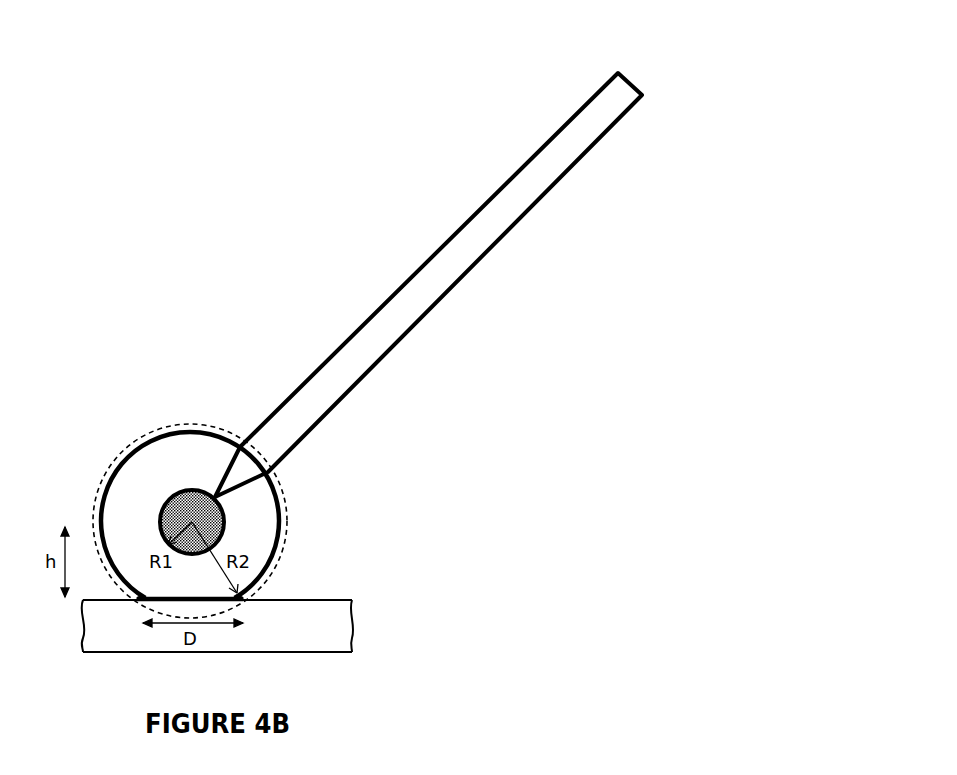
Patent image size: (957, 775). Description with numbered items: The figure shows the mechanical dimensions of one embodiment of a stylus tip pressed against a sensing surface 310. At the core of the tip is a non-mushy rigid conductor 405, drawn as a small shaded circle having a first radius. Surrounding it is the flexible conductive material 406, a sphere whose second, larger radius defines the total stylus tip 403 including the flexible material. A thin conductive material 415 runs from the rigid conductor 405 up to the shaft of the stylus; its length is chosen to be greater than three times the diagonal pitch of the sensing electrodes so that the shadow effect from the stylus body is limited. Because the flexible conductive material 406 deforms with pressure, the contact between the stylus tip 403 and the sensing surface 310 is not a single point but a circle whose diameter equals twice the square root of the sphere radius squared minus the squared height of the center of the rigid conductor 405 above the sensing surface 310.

The thin conductive material 415 is at (348, 363).
The rigid conductor 405 is at (176, 500).
The stylus tip 403 is at (288, 518).
The flexible conductive material 406 is at (263, 552).
The sensing surface 310 is at (350, 630).